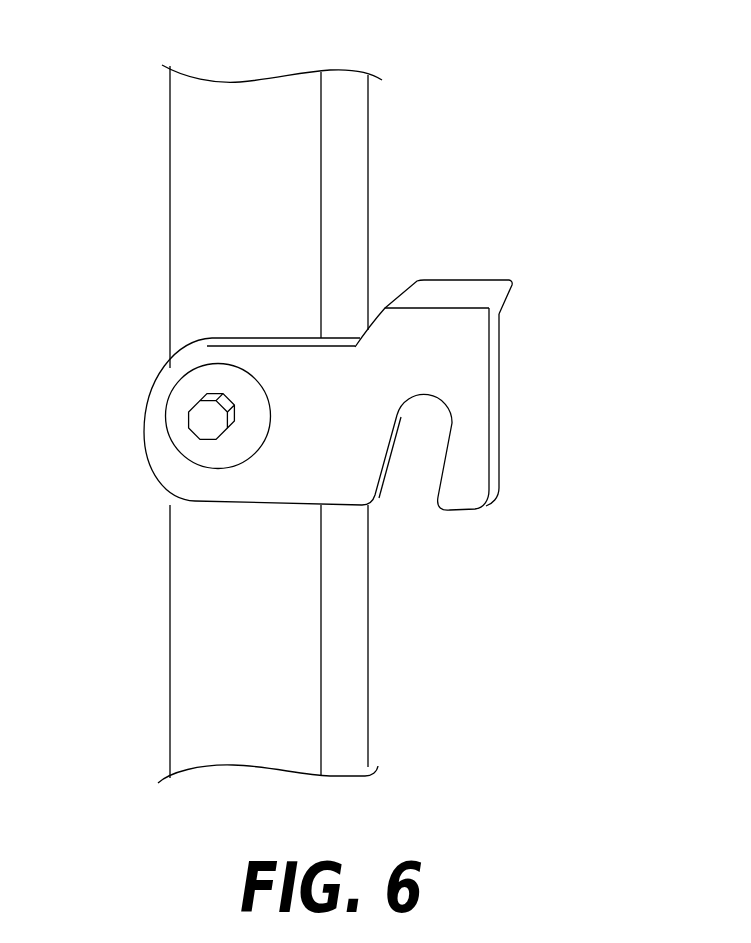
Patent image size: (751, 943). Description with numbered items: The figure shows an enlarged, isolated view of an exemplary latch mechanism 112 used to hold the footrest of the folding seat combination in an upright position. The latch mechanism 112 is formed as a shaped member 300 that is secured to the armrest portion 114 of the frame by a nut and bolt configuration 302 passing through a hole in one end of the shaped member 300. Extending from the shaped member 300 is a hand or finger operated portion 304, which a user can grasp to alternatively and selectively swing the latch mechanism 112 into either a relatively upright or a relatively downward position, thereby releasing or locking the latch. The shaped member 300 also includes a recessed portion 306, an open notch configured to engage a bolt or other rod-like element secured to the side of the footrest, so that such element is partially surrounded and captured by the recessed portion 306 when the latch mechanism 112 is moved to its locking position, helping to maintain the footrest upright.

The latch mechanism 112 is at (397, 424).
The armrest portion 114 is at (369, 168).
The shaped member 300 is at (382, 380).
The nut and bolt configuration 302 is at (193, 417).
The hand or finger operated portion 304 is at (513, 283).
The recessed portion 306 is at (390, 460).